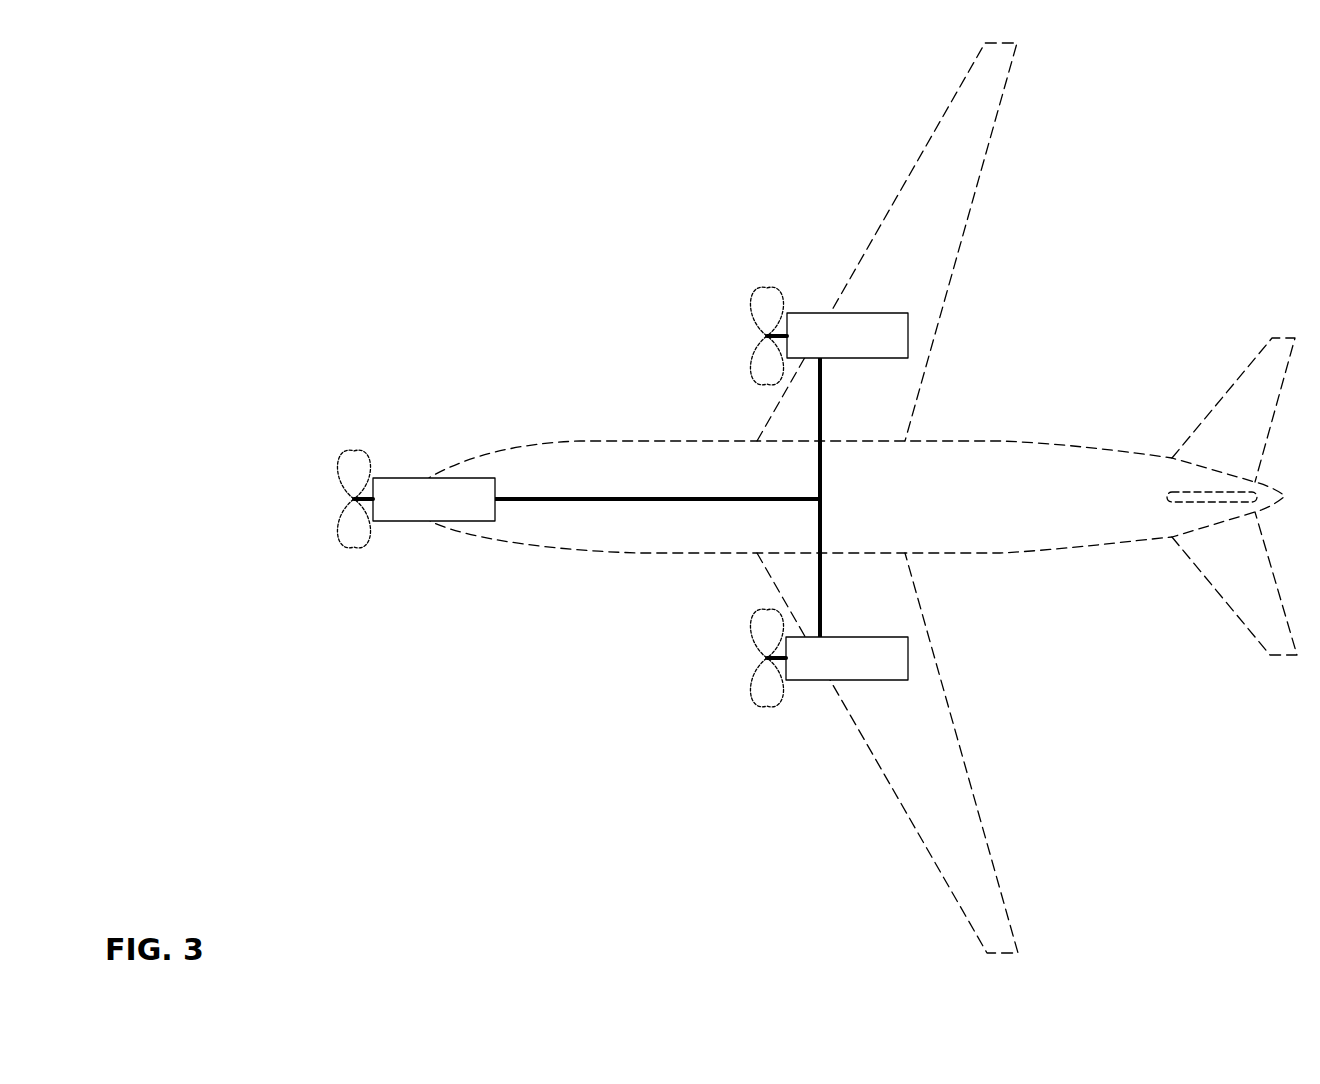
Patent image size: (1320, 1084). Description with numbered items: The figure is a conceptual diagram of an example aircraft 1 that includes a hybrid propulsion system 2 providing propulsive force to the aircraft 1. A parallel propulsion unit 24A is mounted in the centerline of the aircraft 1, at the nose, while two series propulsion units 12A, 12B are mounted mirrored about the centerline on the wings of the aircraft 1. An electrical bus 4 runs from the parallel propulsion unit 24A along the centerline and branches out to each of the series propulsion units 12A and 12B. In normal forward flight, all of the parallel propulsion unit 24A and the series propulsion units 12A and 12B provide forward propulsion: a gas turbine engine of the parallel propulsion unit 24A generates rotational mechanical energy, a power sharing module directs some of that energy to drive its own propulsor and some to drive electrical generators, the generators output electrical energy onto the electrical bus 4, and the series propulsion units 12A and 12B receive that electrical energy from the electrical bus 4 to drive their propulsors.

The aircraft 1 is at (573, 443).
The system 2 is at (767, 498).
The electrical bus 4 is at (668, 497).
The series propulsion unit 12A is at (747, 332).
The series propulsion unit 12B is at (745, 661).
The parallel propulsion unit 24A is at (329, 504).